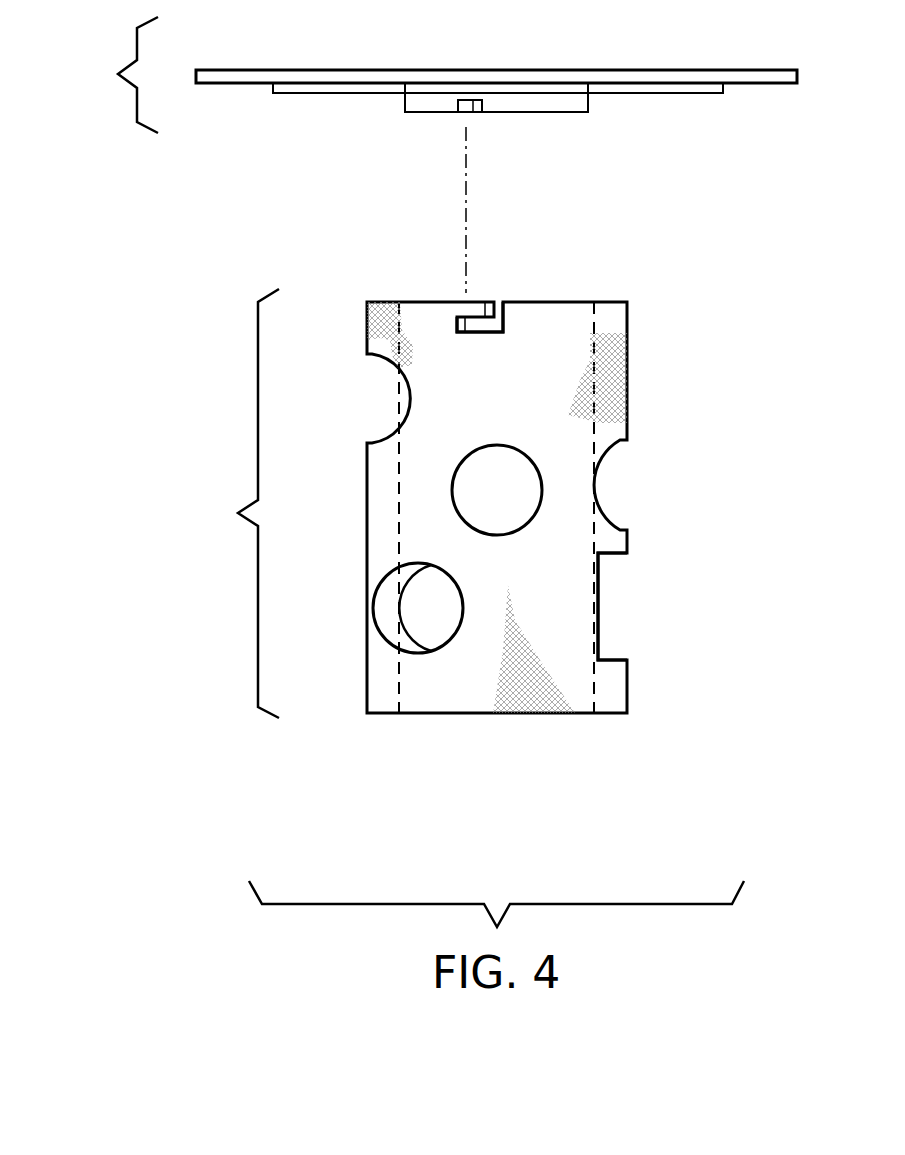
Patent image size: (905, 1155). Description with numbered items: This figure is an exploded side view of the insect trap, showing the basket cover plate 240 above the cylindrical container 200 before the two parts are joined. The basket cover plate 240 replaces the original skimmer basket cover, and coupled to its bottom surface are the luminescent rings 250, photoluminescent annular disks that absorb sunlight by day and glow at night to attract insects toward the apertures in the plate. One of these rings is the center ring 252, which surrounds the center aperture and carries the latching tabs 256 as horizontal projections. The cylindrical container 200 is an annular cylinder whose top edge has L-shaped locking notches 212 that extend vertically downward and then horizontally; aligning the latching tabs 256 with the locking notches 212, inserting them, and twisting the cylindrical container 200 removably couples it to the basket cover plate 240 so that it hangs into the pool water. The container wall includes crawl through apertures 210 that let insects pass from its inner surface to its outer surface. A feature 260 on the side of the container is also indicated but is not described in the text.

The basket cover plate 240 is at (422, 75).
The luminescent rings 250 is at (340, 93).
The center ring 252 is at (553, 101).
The latching tabs 256 is at (462, 112).
The cylindrical container 200 is at (400, 503).
The locking notches 212 is at (515, 316).
The crawl through apertures 210 is at (463, 604).
The side recess 260 is at (598, 607).